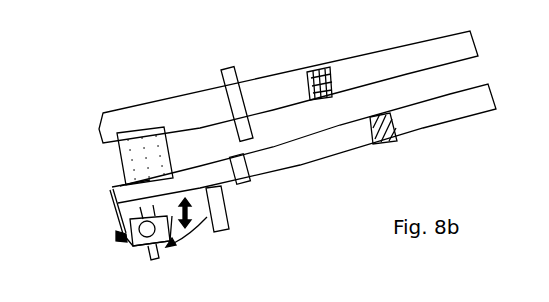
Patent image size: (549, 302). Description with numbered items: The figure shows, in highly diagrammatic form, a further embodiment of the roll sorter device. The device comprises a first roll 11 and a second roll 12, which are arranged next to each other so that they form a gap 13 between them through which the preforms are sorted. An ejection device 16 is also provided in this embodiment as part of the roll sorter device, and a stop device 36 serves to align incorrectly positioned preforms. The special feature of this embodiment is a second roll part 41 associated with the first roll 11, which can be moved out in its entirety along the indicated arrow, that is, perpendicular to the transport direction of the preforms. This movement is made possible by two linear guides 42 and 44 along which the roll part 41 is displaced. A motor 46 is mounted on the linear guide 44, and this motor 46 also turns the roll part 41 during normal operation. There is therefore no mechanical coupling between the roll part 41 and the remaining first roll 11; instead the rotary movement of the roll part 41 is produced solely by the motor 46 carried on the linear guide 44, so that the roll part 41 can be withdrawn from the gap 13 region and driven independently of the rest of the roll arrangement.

The first roll 11 is at (423, 101).
The second roll 12 is at (407, 70).
The gap 13 is at (382, 100).
The ejection device 16 is at (112, 150).
The stop device 36 is at (233, 97).
The second roll part 41 is at (110, 195).
The linear guide 42 is at (229, 222).
The linear guide 44 is at (158, 258).
The motor 46 is at (118, 236).